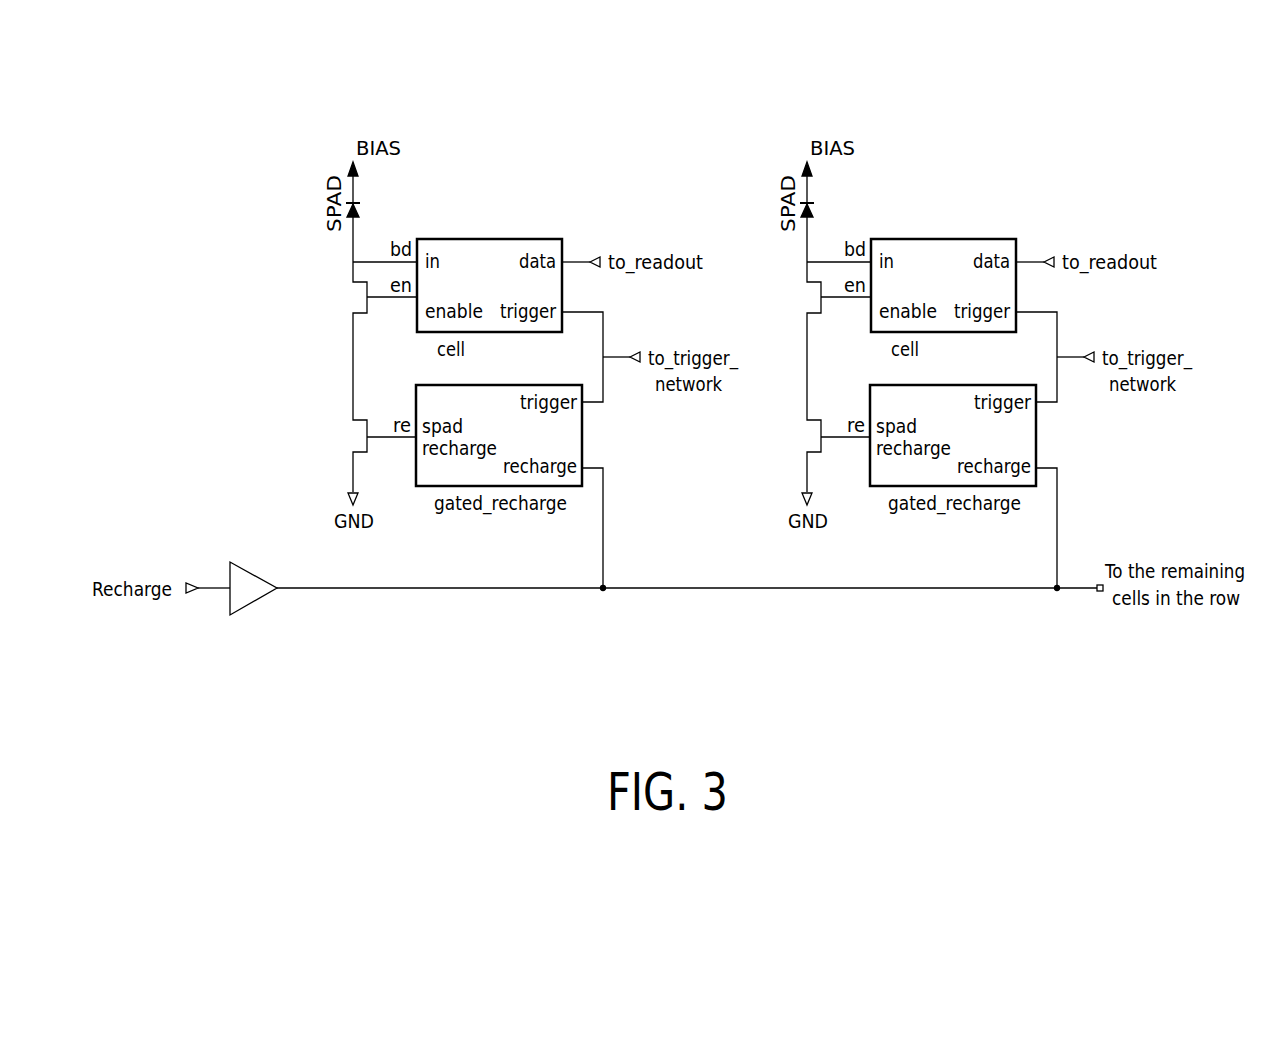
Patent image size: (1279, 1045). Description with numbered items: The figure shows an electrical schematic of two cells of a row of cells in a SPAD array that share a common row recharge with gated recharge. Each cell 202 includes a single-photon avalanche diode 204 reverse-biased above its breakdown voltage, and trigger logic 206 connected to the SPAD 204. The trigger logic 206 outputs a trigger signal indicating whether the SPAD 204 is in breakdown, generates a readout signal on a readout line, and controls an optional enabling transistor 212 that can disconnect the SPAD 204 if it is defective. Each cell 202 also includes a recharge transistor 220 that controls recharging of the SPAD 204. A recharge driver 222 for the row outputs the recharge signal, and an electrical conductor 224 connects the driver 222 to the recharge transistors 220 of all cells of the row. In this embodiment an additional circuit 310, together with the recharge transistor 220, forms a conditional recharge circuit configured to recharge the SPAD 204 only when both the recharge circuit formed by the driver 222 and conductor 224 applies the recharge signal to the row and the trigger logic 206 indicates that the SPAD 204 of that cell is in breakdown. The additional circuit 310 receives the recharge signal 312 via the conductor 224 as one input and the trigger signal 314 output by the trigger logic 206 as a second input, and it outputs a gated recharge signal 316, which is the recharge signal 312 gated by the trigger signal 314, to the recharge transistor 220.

The cell 202 is at (713, 363).
The single-photon avalanche diode 204 is at (621, 201).
The trigger logic 206 is at (500, 239).
The enabling transistor 212 is at (542, 311).
The recharge transistor 220 is at (542, 445).
The recharge driver 222 is at (248, 562).
The electrical conductor 224 is at (715, 590).
The additional circuit 310 is at (766, 450).
The recharge signal 312 is at (603, 532).
The trigger signal 314 is at (603, 325).
The gated recharge signal 316 is at (390, 438).